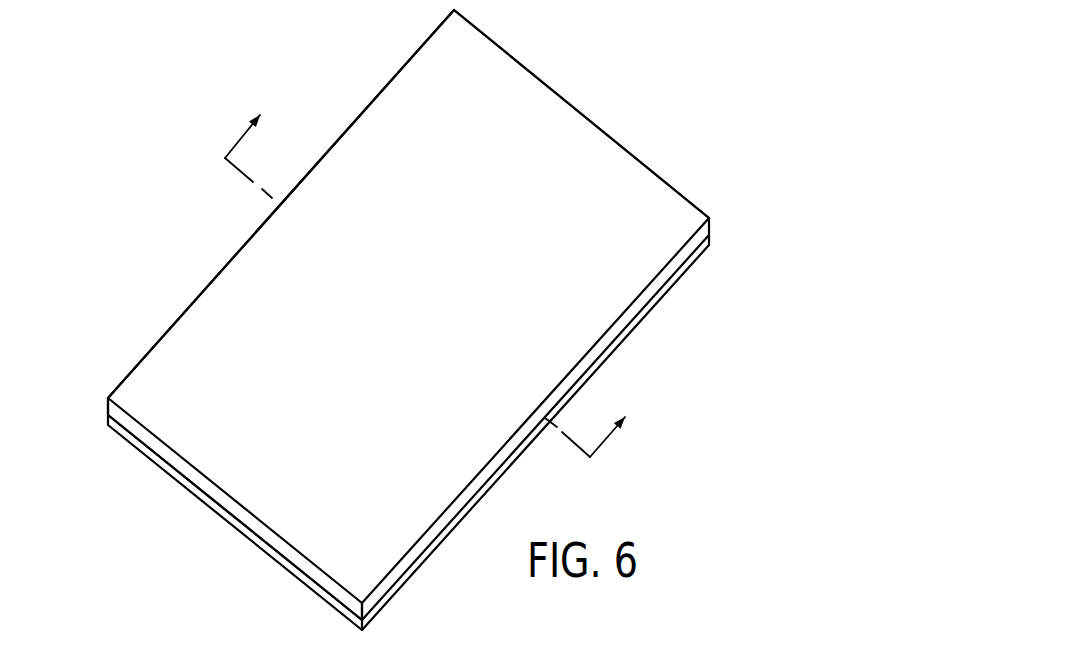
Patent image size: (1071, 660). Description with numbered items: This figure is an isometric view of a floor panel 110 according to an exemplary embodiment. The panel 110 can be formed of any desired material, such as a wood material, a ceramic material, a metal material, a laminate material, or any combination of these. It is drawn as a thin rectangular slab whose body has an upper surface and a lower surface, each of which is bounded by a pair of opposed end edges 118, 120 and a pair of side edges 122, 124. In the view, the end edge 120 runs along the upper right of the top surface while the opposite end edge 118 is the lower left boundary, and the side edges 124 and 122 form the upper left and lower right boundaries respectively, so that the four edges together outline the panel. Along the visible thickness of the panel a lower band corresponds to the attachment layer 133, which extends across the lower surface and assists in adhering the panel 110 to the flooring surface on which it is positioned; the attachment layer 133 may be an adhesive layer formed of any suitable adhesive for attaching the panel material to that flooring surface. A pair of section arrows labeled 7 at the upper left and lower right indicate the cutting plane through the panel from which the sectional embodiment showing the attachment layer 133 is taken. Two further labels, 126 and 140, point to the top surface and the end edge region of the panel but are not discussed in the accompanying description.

The floor panel 110 is at (627, 65).
The end edge 120 is at (493, 41).
The top surface 126 is at (435, 77).
The side edge 124 is at (333, 138).
The perimeter edge 140 is at (655, 173).
The side edge 122 is at (598, 352).
The end edge 118 is at (168, 455).
The attachment layer 133 is at (273, 558).
The section line 7 is at (437, 267).